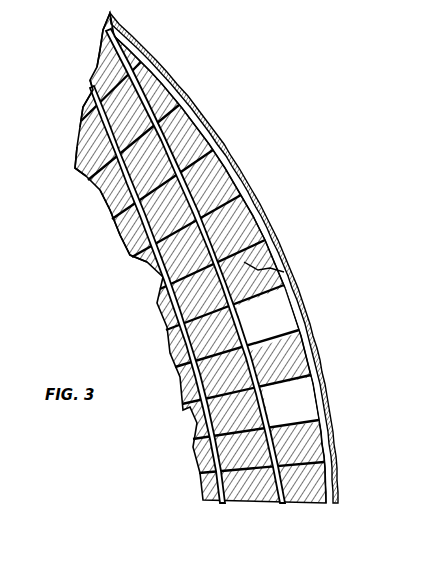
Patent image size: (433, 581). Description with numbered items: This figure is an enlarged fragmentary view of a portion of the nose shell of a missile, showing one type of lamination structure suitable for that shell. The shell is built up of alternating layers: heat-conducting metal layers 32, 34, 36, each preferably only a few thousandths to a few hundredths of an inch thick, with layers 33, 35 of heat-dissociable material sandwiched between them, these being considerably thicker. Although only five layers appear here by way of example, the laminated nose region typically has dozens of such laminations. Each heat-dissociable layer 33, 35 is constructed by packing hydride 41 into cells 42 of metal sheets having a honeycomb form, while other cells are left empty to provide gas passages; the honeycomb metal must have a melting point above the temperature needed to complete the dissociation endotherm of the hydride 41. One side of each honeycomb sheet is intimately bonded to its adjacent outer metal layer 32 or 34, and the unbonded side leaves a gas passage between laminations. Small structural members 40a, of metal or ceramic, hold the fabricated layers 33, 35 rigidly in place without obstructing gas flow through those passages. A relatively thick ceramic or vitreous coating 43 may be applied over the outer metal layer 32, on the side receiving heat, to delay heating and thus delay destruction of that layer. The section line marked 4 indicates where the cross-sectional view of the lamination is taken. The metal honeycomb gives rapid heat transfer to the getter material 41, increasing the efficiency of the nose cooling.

The section line 4- 4 is at (262, 207).
The metal layer 32 is at (224, 258).
The layer of heat-dissociable material 33 is at (82, 40).
The metal layer 34 is at (220, 269).
The layer of heat-dissociable material 35 is at (67, 103).
The metal layer 36 is at (113, 226).
The structural members 40a is at (191, 266).
The hydride 41 is at (219, 258).
The cells 42 is at (183, 211).
The ceramic coating 43 is at (207, 267).